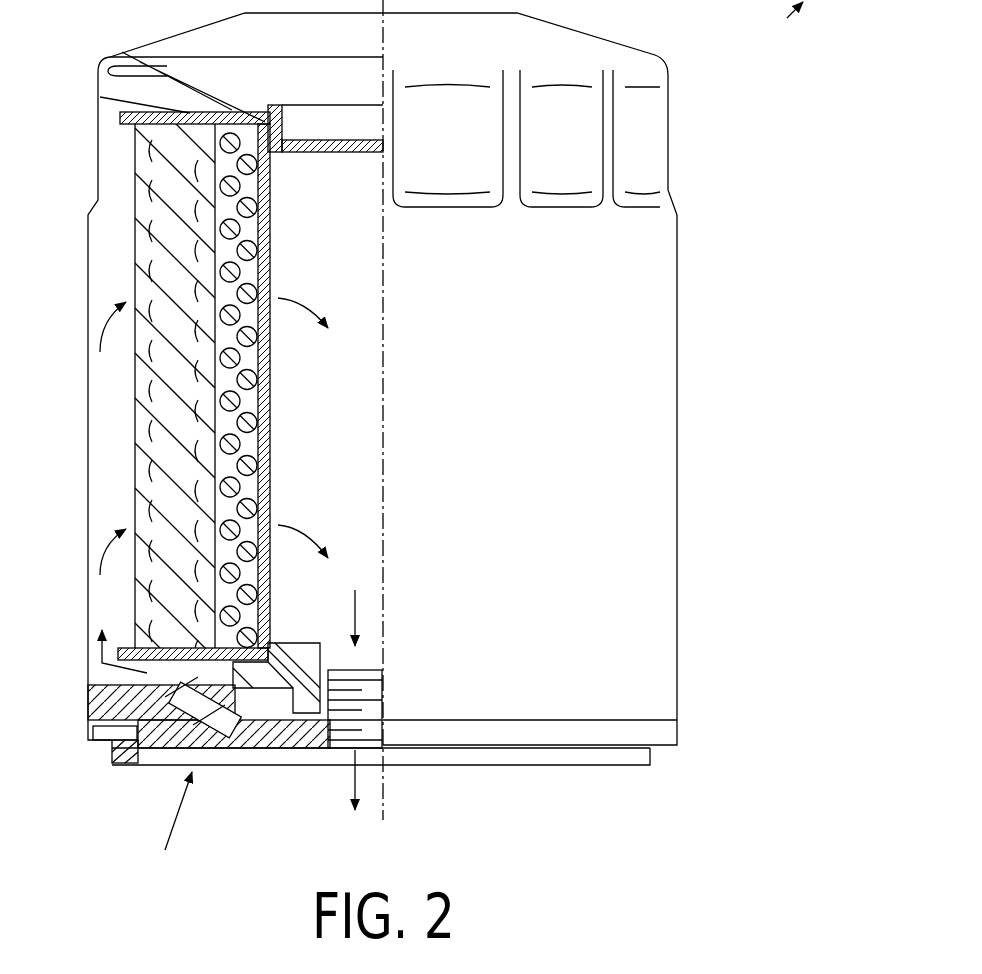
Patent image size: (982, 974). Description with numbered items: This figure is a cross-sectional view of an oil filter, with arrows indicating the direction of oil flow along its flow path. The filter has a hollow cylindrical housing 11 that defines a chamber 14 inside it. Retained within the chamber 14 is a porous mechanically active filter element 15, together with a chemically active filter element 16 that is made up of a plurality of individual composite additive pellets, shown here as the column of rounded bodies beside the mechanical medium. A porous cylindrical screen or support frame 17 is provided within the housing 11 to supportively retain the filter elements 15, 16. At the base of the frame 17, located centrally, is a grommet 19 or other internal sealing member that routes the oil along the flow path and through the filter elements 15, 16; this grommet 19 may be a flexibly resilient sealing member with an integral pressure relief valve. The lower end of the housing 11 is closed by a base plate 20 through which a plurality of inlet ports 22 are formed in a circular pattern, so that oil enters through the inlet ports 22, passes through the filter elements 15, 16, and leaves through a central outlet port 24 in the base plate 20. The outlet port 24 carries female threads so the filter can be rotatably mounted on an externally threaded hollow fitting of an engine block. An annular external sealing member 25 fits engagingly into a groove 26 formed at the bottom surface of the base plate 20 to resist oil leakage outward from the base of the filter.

The housing 11 is at (529, 410).
The chamber 14 is at (100, 404).
The porous mechanically active filter element 15 is at (148, 273).
The chemically active filter element 16 is at (228, 483).
The porous cylindrical screen or support frame 17 is at (100, 97).
The grommet 19 is at (295, 642).
The base plate 20 is at (280, 752).
The inlet ports 22 is at (223, 728).
The central outlet port 24 is at (363, 740).
The annular external sealing member 25 is at (120, 765).
The groove 26 is at (107, 747).